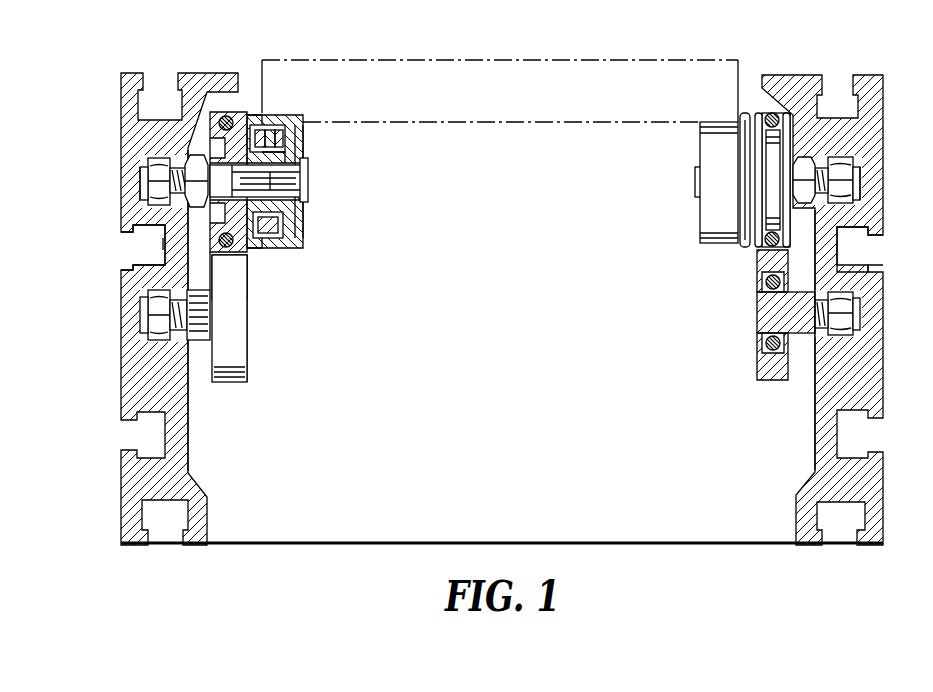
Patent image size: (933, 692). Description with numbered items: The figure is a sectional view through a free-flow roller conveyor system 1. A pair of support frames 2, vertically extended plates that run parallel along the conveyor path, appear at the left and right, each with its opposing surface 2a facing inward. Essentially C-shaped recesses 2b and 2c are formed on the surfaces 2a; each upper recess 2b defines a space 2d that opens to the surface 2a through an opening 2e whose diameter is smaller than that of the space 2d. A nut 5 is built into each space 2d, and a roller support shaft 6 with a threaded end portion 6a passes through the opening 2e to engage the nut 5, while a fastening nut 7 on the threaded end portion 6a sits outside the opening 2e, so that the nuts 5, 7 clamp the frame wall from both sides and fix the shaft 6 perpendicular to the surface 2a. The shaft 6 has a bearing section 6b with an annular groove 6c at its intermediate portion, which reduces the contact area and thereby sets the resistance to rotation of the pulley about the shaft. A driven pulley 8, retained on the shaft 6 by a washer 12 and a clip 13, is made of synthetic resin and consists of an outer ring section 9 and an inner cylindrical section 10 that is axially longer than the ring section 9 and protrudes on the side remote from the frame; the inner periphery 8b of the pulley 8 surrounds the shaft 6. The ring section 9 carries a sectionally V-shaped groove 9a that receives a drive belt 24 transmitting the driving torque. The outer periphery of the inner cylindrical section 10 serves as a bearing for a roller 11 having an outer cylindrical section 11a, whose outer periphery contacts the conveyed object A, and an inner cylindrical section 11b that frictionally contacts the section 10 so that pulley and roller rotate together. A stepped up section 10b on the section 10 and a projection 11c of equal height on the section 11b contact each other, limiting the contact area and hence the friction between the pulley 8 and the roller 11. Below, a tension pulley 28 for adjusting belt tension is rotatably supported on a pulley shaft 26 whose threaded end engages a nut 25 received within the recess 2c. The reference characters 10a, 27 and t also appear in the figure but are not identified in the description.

The roller conveyor system 1 is at (438, 57).
The object to be conveyed A is at (498, 58).
The support frame 2 is at (119, 375).
The opposing surface 2a is at (189, 440).
The recess 2b is at (146, 184).
The recess 2c is at (142, 308).
The space 2d is at (150, 160).
The opening 2e is at (178, 164).
The nut 5 is at (147, 172).
The roller support shaft 6 is at (313, 180).
The threaded end portion 6a is at (188, 157).
The bearing section 6b is at (290, 188).
The annular groove 6c is at (272, 152).
The fastening nut 7 is at (162, 228).
The driven pulley 8 is at (259, 265).
The inner periphery of the pulley 8b is at (172, 243).
The outer ring section 9 is at (237, 112).
The annular groove 9a is at (226, 116).
The inner cylindrical section 10 is at (304, 162).
The lower flange 10a is at (302, 226).
The stepped up section 10b is at (258, 114).
The roller 11 is at (293, 249).
The outer cylindrical section 11a is at (262, 140).
The inner cylindrical section 11b is at (269, 147).
The projection 11c is at (273, 152).
The washer 12 is at (304, 150).
The clip 13 is at (301, 201).
The drive belt 24 is at (240, 288).
The nut 25 is at (165, 328).
The pulley shaft 26 is at (200, 341).
The ball bearing 27 is at (764, 343).
The tension pulley 28 is at (243, 346).
The gap t is at (260, 252).